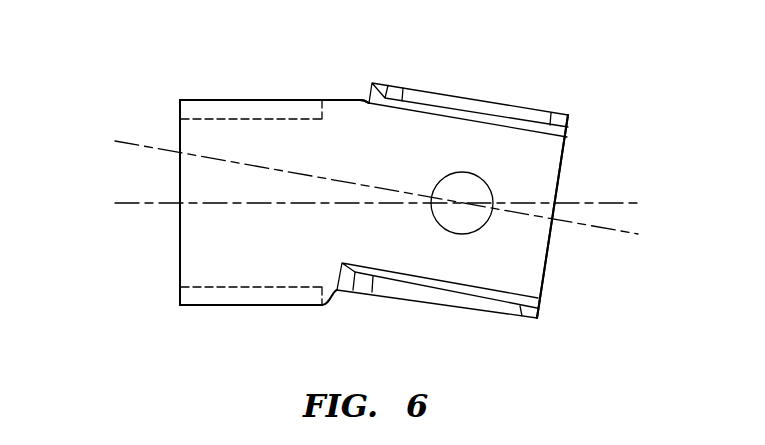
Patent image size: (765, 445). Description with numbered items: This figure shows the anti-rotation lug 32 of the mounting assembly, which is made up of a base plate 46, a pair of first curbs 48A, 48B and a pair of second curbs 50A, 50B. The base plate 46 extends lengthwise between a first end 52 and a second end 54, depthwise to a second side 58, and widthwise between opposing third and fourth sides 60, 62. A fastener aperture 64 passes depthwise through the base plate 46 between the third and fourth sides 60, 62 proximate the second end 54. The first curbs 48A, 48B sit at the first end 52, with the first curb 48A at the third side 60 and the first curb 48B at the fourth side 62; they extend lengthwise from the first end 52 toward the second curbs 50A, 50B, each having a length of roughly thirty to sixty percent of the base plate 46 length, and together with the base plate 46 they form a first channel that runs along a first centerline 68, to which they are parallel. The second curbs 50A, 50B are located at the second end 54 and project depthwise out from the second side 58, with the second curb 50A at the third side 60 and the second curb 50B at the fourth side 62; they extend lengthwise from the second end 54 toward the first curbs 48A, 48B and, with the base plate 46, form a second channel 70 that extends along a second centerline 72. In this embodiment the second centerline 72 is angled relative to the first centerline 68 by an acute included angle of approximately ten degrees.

The anti-rotation lug 32 is at (546, 81).
The base plate 46 is at (288, 257).
The first curb 48A is at (242, 305).
The first curb 48B is at (277, 100).
The second curb 50A is at (457, 307).
The second curb 50B is at (447, 92).
The first end 52 is at (180, 257).
The second end 54 is at (550, 242).
The second side 58 is at (337, 102).
The third side 60 is at (190, 306).
The fourth side 62 is at (193, 100).
The fastener aperture 64 is at (465, 188).
The first centerline 68 is at (132, 204).
The second channel 70 is at (512, 257).
The second centerline 72 is at (128, 141).